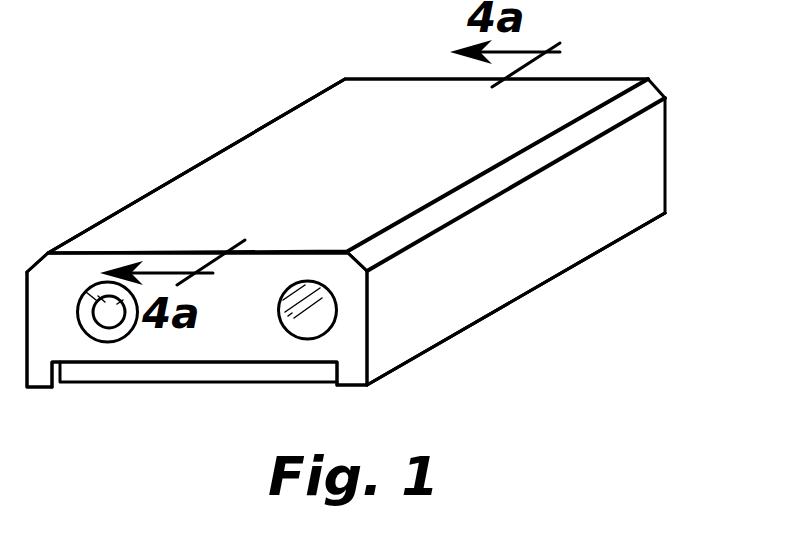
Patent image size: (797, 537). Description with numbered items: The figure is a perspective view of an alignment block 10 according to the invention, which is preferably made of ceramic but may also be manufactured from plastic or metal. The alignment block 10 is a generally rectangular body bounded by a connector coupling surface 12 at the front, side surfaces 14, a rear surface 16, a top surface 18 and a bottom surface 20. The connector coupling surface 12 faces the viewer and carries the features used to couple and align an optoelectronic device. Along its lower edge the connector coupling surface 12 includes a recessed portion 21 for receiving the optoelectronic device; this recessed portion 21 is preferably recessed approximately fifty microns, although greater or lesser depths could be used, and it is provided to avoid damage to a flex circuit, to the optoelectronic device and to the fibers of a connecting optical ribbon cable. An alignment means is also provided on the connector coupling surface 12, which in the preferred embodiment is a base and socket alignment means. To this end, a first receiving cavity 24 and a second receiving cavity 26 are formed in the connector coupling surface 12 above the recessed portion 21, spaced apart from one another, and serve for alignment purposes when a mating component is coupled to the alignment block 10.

The alignment block 10 is at (228, 101).
The connector coupling surface 12 is at (163, 345).
The side surfaces 14 is at (128, 205).
The rear surface 16 is at (597, 78).
The top surface 18 is at (362, 93).
The bottom surface 20 is at (483, 315).
The recessed portion 21 is at (230, 370).
The first receiving cavity 24 is at (110, 315).
The second receiving cavity 26 is at (312, 320).